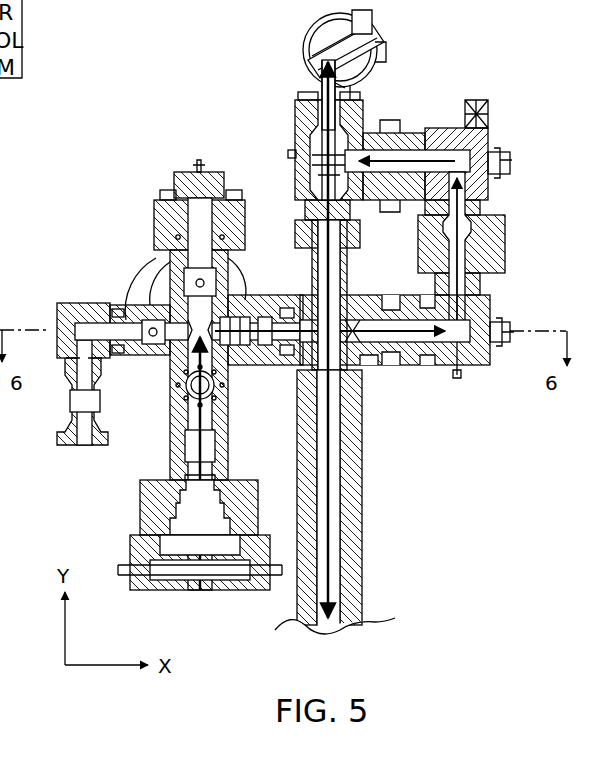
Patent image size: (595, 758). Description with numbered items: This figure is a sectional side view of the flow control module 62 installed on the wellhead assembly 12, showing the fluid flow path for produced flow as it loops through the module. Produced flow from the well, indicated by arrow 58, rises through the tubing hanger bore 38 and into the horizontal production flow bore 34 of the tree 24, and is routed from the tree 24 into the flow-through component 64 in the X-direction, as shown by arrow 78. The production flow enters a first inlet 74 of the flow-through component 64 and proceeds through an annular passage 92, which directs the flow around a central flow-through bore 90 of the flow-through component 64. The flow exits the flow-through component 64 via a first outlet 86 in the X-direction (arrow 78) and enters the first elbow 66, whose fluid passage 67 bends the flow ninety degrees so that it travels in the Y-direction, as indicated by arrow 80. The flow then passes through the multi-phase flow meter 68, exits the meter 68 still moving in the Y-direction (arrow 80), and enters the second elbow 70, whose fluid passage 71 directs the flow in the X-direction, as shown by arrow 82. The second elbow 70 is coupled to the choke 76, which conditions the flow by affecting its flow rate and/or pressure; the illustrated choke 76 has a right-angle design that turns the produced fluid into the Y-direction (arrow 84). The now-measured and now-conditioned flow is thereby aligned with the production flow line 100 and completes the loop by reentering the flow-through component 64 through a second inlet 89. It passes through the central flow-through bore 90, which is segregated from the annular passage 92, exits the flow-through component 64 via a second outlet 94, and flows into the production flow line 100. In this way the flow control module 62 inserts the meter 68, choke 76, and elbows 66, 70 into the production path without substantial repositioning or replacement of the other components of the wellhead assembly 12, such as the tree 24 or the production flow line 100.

The wellhead valve assembly 12 is at (166, 140).
The tree 24 is at (118, 214).
The production flow bore 34 is at (258, 330).
The tubing hanger bore 38 is at (205, 470).
The arrow indicating produced flow 58 is at (193, 447).
The flow control module 62 is at (535, 100).
The flow-through component 64 is at (348, 346).
The first elbow 66 is at (478, 370).
The fluid passage 67 is at (470, 340).
The multi-phase flow meter 68 is at (480, 236).
The second elbow 70 is at (480, 144).
The fluid passage 71 is at (443, 160).
The first inlet 74 is at (275, 332).
The choke 76 is at (300, 133).
The arrow indicating X-direction flow 78 is at (285, 356).
The arrow indicating Y-direction flow 80 is at (462, 292).
The arrow indicating X-direction flow 82 is at (408, 158).
The arrow indicating Y-direction flow 84 is at (330, 298).
The first outlet 86 is at (385, 340).
The second inlet 89 is at (338, 241).
The central flow-through bore 90 is at (335, 265).
The annular passage 92 is at (345, 360).
The second outlet 94 is at (322, 378).
The production flow line 100 is at (364, 563).